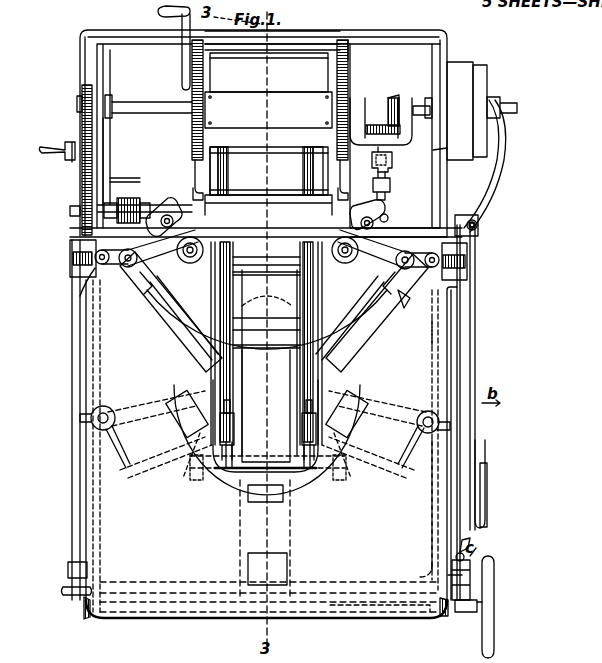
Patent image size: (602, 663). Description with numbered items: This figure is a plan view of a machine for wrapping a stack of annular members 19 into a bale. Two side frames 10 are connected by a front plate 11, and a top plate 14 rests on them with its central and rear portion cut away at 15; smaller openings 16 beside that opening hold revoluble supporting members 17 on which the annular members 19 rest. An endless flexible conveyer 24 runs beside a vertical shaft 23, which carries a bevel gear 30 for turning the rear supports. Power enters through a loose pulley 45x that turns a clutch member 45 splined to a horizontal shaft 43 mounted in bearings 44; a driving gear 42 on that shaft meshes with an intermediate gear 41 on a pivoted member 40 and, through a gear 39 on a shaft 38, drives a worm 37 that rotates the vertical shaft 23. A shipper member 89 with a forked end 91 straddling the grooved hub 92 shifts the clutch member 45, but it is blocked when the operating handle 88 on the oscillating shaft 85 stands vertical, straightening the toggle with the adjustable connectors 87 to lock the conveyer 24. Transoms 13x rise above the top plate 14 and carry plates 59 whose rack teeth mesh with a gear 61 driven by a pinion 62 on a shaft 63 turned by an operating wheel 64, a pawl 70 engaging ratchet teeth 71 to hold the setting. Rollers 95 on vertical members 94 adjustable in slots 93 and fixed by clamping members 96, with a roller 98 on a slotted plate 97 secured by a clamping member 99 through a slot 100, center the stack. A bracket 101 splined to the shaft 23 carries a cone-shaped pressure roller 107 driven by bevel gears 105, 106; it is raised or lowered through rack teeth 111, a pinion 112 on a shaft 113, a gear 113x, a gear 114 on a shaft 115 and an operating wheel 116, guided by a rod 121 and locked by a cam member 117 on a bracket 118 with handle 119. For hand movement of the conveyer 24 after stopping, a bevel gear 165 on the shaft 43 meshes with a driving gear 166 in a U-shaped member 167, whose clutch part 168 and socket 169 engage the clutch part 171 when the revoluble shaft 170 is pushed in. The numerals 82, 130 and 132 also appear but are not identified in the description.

The side frames 10 is at (72, 526).
The front plate 11 is at (300, 625).
The transoms 13x is at (205, 70).
The top plate 14 is at (146, 616).
The cut-away opening 15 is at (322, 398).
The smaller openings 16 is at (192, 470).
The revoluble supporting members 17 is at (175, 462).
The annular members 19 is at (348, 530).
The vertical shaft 23 is at (140, 282).
The endless flexible conveyer 24 is at (192, 168).
The bevel gear 30 is at (116, 198).
The worm 37 is at (128, 198).
The revoluble shaft 38 is at (144, 203).
The gear 39 is at (75, 228).
The pivoted member 40 is at (70, 160).
The intermediate gear 41 is at (103, 140).
The driving gear 42 is at (82, 92).
The horizontal shaft 43 is at (147, 110).
The bearings 44 is at (112, 98).
The clutch member 45 is at (487, 78).
The loose pulley 45x is at (460, 66).
The plate 59 is at (214, 160).
The revoluble gear 61 is at (192, 130).
The pinion 62 is at (186, 50).
The shaft 63 is at (291, 53).
The operating wheel 64 is at (158, 12).
The pawl 70 is at (202, 199).
The ratchet teeth 71 is at (222, 178).
The rod 82 is at (478, 335).
The oscillating shaft 85 is at (432, 470).
The adjustable connectors 87 is at (302, 438).
The operating handle 88 is at (486, 496).
The shipper member 89 is at (472, 347).
The forked end 91 is at (498, 148).
The grooved hub 92 is at (506, 95).
The slots 93 is at (88, 388).
The vertical members 94 is at (100, 430).
The rollers 95 is at (91, 416).
The clamping members 96 is at (94, 428).
The slotted plate 97 is at (167, 215).
The revoluble roller 98 is at (200, 241).
The clamping member 99 is at (388, 218).
The slot 100 is at (163, 210).
The bracket 101 is at (170, 292).
The bevel gear 105 is at (398, 300).
The bevel gear 106 is at (138, 274).
The pressure roller 107 is at (170, 322).
The rack teeth 111 is at (72, 268).
The pinion 112 is at (73, 258).
The shaft 113 is at (72, 346).
The gear 113x is at (514, 588).
The gear 114 is at (88, 620).
The shaft 115 is at (346, 625).
The operating wheel 116 is at (494, 626).
The cam member 117 is at (466, 556).
The bracket 118 is at (455, 558).
The operating handle 119 is at (470, 543).
The rod 121 is at (460, 220).
The inner rod 130 is at (225, 402).
The cylinder 132 is at (230, 402).
The bevel gear 165 is at (396, 100).
The driving gear 166 is at (370, 125).
The U-shaped member 167 is at (325, 106).
The clutch part 168 is at (372, 162).
The socket 169 is at (392, 162).
The revoluble shaft 170 is at (392, 182).
The clutch part 171 is at (390, 184).